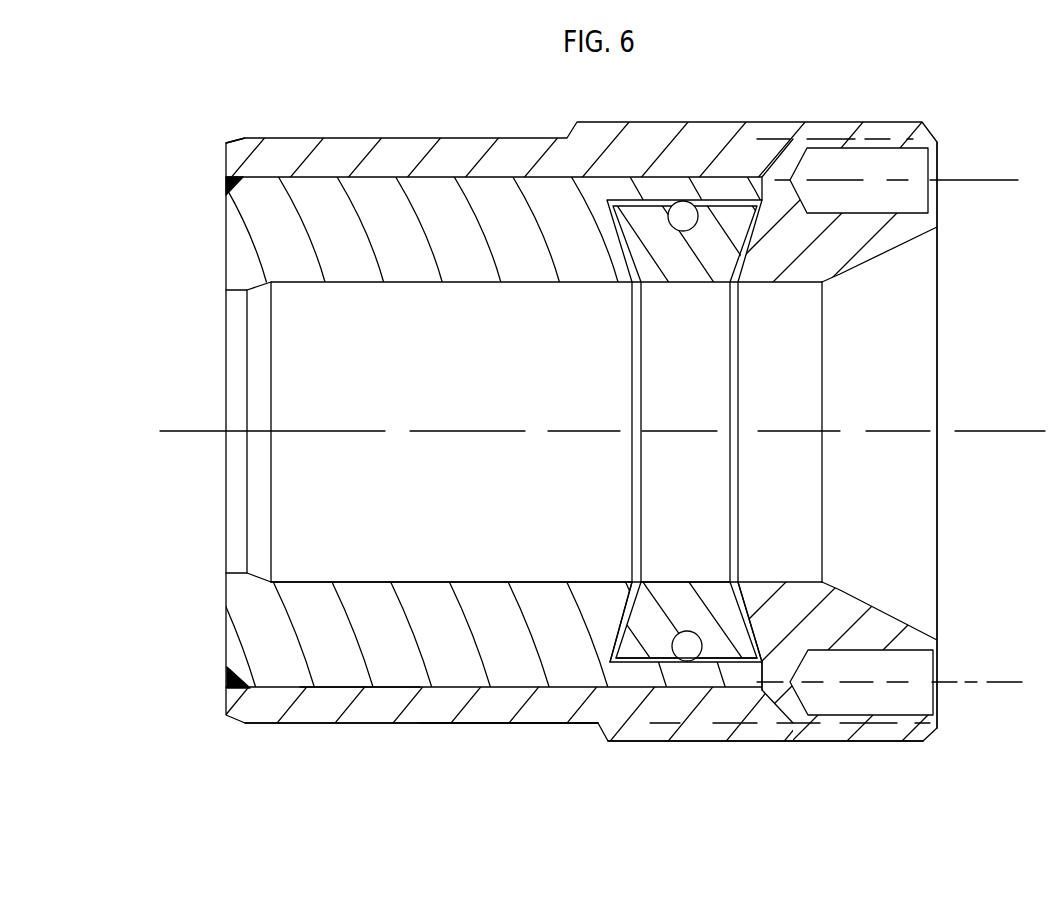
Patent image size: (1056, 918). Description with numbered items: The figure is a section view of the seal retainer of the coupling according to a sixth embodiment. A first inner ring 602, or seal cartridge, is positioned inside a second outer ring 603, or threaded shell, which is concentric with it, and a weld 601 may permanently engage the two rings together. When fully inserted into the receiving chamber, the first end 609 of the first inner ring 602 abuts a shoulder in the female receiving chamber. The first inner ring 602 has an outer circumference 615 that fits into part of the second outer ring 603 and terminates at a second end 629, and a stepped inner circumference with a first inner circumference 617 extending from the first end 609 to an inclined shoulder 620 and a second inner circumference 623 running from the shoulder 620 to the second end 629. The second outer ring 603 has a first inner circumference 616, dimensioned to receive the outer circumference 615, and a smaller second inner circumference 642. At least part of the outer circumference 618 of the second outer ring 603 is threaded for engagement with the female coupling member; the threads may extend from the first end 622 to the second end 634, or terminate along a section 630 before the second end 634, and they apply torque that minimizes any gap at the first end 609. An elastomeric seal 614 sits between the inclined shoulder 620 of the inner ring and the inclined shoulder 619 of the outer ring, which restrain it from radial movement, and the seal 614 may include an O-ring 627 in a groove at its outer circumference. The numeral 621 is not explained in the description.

The weld 601 is at (227, 703).
The first inner ring 602 is at (400, 673).
The second outer ring 603 is at (817, 632).
The first end 609 is at (227, 635).
The second end 634 is at (227, 707).
The outer circumference 615 is at (330, 688).
The first inner circumference 616 is at (360, 683).
The first inner circumference 617 is at (420, 581).
The section 630 is at (483, 713).
The inclined shoulder 619 is at (750, 634).
The elastomeric seal 614 is at (725, 647).
The O-ring 627 is at (682, 656).
The seal element 621 is at (668, 655).
The second inner circumference 623 is at (642, 650).
The inclined shoulder 620 is at (621, 622).
The second end 629 is at (781, 678).
The second inner circumference 642 is at (780, 582).
The outer circumference 618 is at (915, 745).
The first end 622 is at (940, 642).